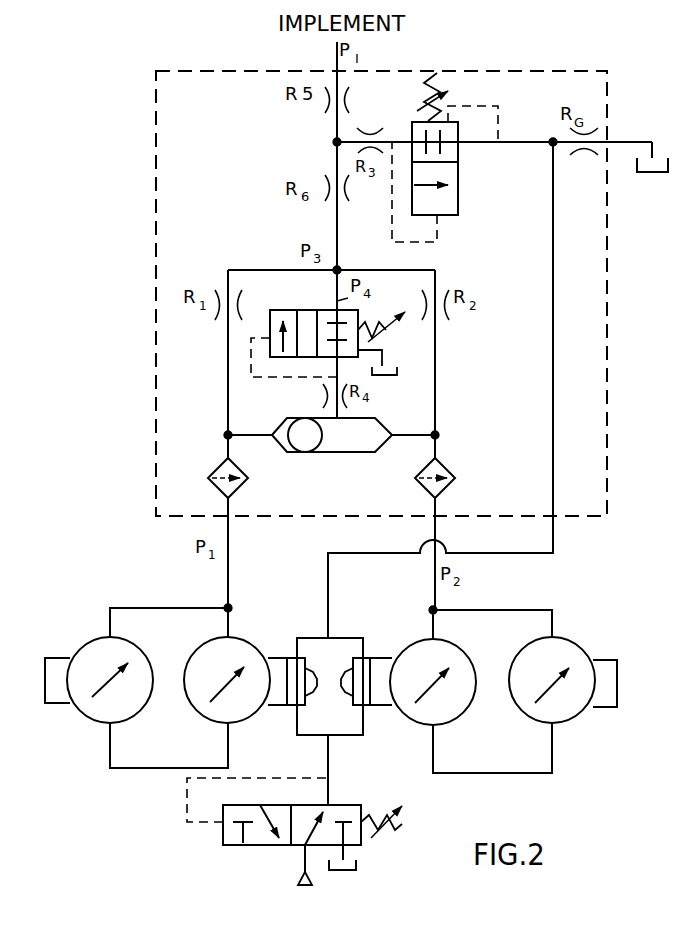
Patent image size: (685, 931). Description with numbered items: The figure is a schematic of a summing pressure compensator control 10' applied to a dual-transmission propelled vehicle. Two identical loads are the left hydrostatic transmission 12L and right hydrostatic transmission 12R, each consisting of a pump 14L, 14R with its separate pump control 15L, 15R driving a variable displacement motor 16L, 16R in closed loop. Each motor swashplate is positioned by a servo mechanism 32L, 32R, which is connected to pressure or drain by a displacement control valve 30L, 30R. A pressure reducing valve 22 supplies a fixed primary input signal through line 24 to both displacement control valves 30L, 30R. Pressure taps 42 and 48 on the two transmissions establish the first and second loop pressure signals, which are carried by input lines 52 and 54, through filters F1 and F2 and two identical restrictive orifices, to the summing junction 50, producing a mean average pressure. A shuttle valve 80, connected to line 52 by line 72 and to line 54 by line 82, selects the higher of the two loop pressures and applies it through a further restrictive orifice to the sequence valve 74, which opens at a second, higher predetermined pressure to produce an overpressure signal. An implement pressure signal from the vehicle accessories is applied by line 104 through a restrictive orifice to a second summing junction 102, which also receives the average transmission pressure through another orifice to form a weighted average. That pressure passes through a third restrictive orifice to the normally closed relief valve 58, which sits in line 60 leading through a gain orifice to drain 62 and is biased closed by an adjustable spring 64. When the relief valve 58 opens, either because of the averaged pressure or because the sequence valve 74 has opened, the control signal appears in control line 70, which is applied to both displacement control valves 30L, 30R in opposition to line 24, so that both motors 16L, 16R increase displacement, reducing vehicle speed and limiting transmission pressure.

The summing pressure compensator control 10' is at (403, 293).
The line 104 is at (336, 122).
The second summing junction 102 is at (335, 143).
The line 60 is at (530, 144).
The relief valve 58 is at (450, 216).
The adjustable spring 64 is at (423, 84).
The drain 62 is at (652, 173).
The control line 70 is at (553, 318).
The summing junction 50 is at (340, 268).
The line 52 is at (228, 352).
The line 54 is at (436, 410).
The sequence valve 74 is at (305, 310).
The line 72 is at (246, 432).
The line 82 is at (408, 432).
The shuttle valve 80 is at (328, 452).
The filter F1 is at (241, 521).
The filter F2 is at (448, 522).
The pressure tap 42 is at (232, 606).
The pressure tap 48 is at (430, 609).
The left hydrostatic transmission 12L is at (74, 626).
The right hydrostatic transmission 12R is at (550, 597).
The left pump 14L is at (127, 712).
The right pump 14R is at (448, 722).
The left pump control 15L is at (60, 702).
The right pump control 15R is at (600, 708).
The left variable displacement motor 16L is at (190, 653).
The right variable displacement motor 16R is at (537, 721).
The left servo mechanism 32L is at (273, 665).
The right servo mechanism 32R is at (380, 665).
The left displacement control valve 30L is at (295, 699).
The right displacement control valve 30R is at (364, 698).
The line 24 is at (327, 770).
The pressure reducing valve 22 is at (272, 867).